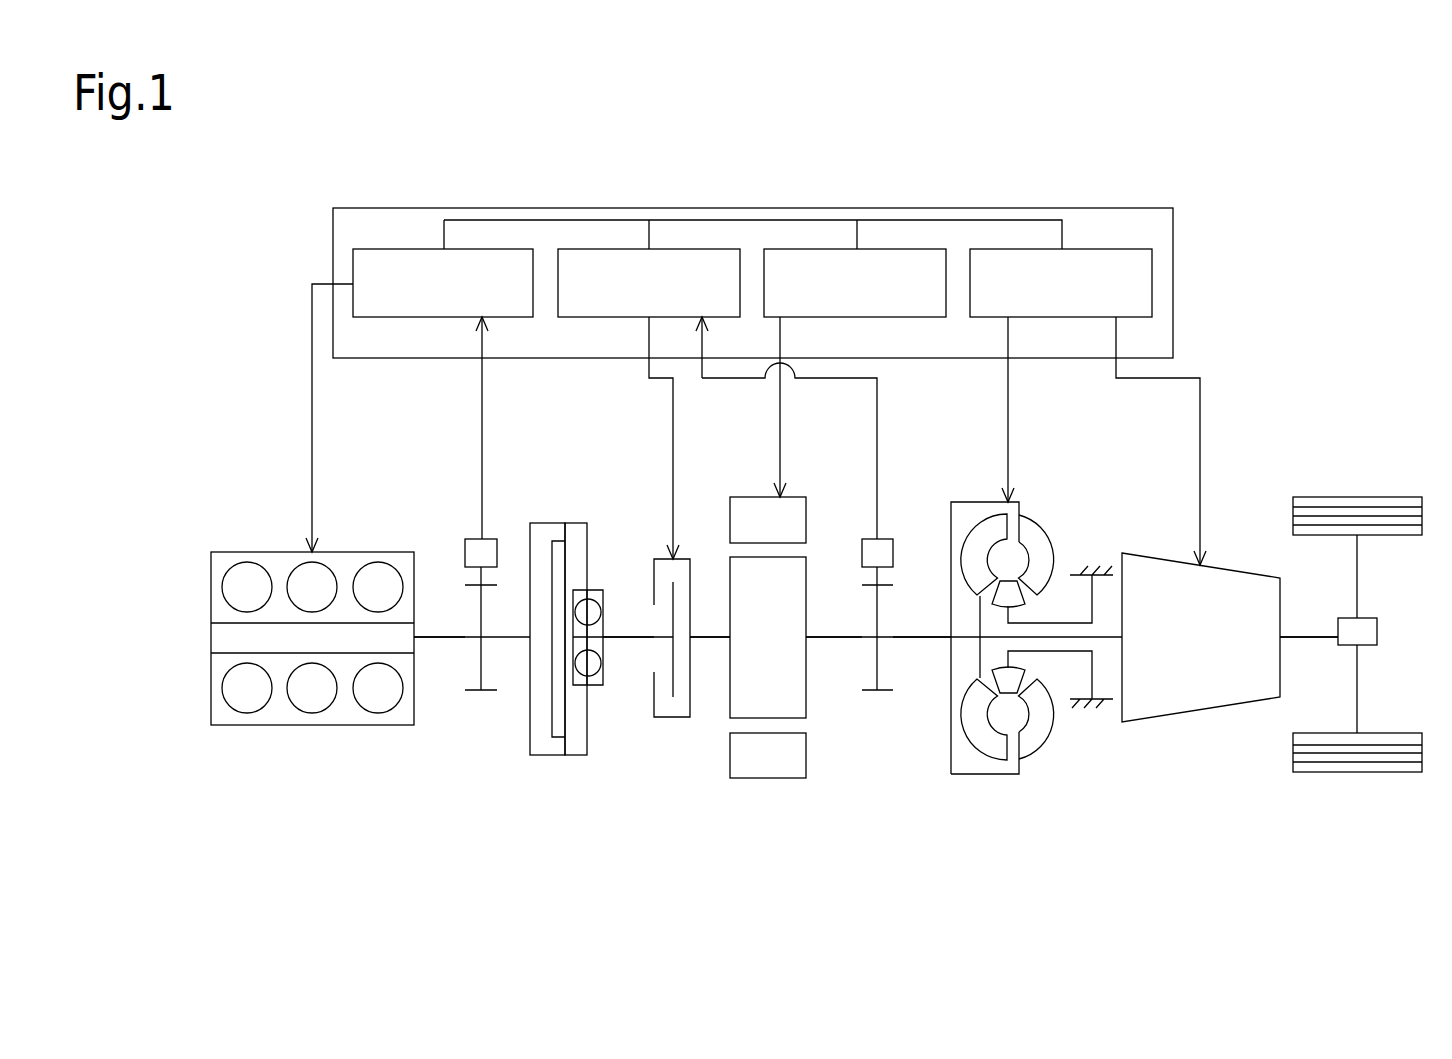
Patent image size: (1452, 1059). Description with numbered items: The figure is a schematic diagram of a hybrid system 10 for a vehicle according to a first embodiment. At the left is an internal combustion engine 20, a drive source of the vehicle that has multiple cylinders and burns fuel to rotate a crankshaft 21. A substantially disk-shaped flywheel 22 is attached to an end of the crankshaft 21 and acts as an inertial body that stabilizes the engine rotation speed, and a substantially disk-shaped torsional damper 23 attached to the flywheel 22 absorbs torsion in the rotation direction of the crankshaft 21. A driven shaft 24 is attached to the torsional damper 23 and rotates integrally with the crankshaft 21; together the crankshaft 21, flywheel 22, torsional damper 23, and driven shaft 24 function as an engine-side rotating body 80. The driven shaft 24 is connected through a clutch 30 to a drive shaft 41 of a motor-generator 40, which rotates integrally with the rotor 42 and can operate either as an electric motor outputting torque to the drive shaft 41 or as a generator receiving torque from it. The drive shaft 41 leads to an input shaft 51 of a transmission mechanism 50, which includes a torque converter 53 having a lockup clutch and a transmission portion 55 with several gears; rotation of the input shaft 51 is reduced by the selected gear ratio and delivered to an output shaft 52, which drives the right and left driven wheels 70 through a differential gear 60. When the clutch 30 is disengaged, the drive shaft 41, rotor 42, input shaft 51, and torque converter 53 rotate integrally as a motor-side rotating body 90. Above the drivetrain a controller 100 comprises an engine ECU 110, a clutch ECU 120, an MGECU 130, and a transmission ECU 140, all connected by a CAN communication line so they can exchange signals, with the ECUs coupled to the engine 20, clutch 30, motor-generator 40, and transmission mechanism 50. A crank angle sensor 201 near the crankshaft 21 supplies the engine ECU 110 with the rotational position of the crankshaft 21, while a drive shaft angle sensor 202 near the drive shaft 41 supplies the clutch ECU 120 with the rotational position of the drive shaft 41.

The hybrid system 10 is at (195, 395).
The internal combustion engine 20 is at (211, 588).
The crankshaft 21 is at (442, 643).
The flywheel 22 is at (550, 755).
The torsional damper 23 is at (575, 755).
The driven shaft 24 is at (622, 640).
The clutch 30 is at (675, 727).
The motor-generator 40 is at (770, 790).
The drive shaft 41 is at (706, 640).
The rotor 42 is at (807, 663).
The transmission mechanism 50 is at (1098, 745).
The input shaft 51 is at (903, 640).
The output shaft 52 is at (1307, 633).
The torque converter 53 is at (983, 774).
The transmission portion 55 is at (1200, 722).
The differential gear 60 is at (1377, 633).
The driven wheels 70 is at (1357, 497).
The engine-side rotating body 80 is at (483, 745).
The motor-side rotating body 90 is at (840, 727).
The controller 100 is at (1173, 228).
The engine ECU 110 is at (398, 249).
The clutch ECU 120 is at (603, 249).
The MGECU 130 is at (810, 249).
The transmission ECU 140 is at (1016, 249).
The crank angle sensor 201 is at (497, 539).
The drive shaft angle sensor 202 is at (886, 539).